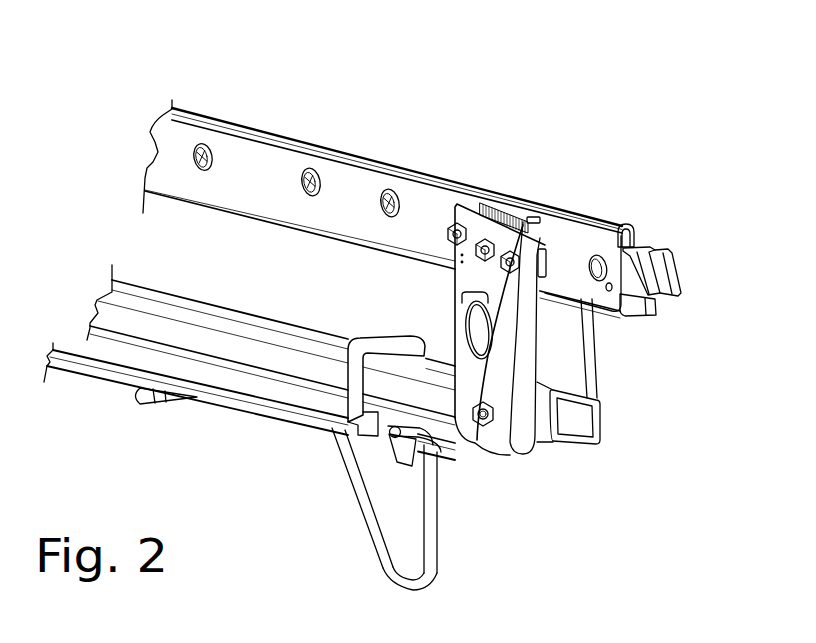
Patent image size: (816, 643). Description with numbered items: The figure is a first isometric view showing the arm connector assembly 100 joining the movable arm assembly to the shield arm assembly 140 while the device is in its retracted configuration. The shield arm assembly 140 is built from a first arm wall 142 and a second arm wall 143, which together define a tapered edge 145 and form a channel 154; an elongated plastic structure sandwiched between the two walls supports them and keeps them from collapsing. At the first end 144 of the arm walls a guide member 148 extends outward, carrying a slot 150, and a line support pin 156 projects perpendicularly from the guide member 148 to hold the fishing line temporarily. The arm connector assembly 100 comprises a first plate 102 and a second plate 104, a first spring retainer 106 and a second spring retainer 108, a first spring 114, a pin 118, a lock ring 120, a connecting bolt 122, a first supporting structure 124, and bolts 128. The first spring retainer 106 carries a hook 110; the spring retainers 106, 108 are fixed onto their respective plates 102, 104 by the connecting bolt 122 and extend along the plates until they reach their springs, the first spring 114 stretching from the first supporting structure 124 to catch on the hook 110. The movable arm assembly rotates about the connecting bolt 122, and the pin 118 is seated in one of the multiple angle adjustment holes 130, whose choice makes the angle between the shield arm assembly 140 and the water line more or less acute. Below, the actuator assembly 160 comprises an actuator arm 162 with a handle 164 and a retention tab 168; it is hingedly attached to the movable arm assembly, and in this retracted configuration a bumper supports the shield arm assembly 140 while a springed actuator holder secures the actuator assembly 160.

The arm connector assembly 100 is at (540, 165).
The first plate 102 is at (525, 440).
The second plate 104 is at (562, 367).
The first spring retainer 106 is at (497, 407).
The second spring retainer 108 is at (582, 313).
The hook 110 is at (540, 266).
The first spring 114 is at (502, 204).
The pin 118 is at (456, 290).
The lock ring 120 is at (465, 330).
The connecting bolt 122 is at (480, 420).
The first supporting structure 124 is at (598, 223).
The bolts 128 is at (456, 222).
The angle adjustment holes 130 is at (465, 296).
The shield arm assembly 140 is at (382, 175).
The first arm wall 142 is at (231, 141).
The second arm wall 143 is at (648, 232).
The first end 144 is at (634, 239).
The tapered edge 145 is at (327, 240).
The guide member 148 is at (666, 273).
The slot 150 is at (658, 268).
The channel 154 is at (603, 217).
The line support pin 156 is at (652, 307).
The actuator assembly 160 is at (270, 455).
The actuator arm 162 is at (78, 365).
The handle 164 is at (430, 583).
The retention tab 168 is at (150, 404).